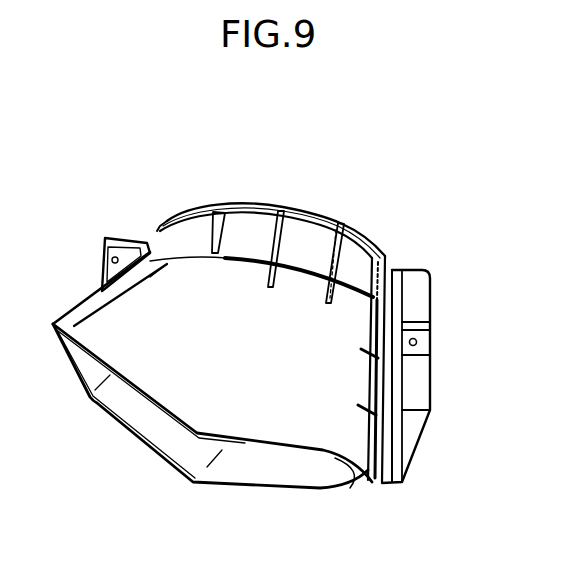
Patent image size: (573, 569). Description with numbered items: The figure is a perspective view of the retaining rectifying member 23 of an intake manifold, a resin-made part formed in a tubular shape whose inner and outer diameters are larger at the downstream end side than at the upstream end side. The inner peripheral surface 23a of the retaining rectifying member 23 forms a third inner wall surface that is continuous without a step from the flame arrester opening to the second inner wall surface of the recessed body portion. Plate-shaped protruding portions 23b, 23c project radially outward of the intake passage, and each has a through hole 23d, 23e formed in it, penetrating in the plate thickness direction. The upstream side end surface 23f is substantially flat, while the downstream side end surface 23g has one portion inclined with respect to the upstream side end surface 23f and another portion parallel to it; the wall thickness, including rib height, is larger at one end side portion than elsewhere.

The retaining rectifying member 23 is at (224, 180).
The inner peripheral surface 23a is at (280, 470).
The plate-shaped protruding portion 23b is at (125, 235).
The plate-shaped protruding portion 23c is at (417, 278).
The through hole 23d is at (107, 247).
The through hole 23e is at (421, 341).
The upstream side end surface 23f is at (360, 222).
The downstream side end surface 23g is at (357, 484).